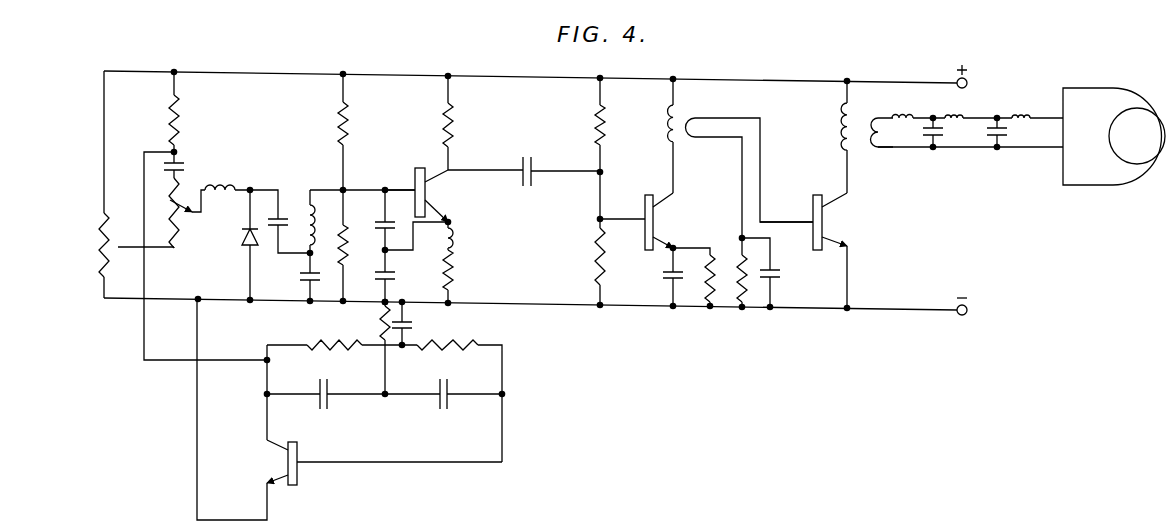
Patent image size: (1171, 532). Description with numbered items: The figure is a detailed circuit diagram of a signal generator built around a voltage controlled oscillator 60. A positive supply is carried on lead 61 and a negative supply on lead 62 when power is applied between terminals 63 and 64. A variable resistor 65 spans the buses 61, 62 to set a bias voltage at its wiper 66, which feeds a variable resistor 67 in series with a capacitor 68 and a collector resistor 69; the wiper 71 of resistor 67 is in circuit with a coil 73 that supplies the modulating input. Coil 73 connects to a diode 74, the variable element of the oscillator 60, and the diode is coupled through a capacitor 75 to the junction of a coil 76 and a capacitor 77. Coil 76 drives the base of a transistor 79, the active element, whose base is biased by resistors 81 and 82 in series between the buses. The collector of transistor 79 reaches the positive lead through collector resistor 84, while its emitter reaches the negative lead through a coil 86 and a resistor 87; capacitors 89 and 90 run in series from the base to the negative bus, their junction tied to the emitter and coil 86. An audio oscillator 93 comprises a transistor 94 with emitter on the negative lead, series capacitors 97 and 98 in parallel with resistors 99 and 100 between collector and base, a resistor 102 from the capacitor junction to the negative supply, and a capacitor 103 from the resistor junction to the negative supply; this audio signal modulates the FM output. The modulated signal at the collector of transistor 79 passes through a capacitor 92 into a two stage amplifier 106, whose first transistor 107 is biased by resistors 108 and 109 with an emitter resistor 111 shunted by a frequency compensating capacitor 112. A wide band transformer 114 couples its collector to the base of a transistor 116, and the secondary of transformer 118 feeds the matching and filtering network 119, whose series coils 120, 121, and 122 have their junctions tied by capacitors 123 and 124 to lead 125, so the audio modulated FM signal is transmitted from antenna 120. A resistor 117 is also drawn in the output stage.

The voltage controlled oscillator 60 is at (229, 64).
The positive supply lead 61 is at (148, 70).
The negative supply lead 62 is at (120, 300).
The terminal 63 is at (964, 78).
The terminal 64 is at (962, 316).
The variable resistor 65 is at (124, 246).
The wiper 66 is at (152, 248).
The variable resistor 67 is at (170, 200).
The capacitor 68 is at (179, 152).
The collector resistor 69 is at (180, 108).
The wiper 71 is at (199, 215).
The coil 73 is at (212, 185).
The diode 74 is at (247, 252).
The capacitor 75 is at (278, 212).
The coil 76 is at (307, 205).
The capacitor 77 is at (303, 278).
The transistor 79 is at (428, 192).
The resistor 81 is at (348, 127).
The resistor 82 is at (348, 238).
The collector resistor 84 is at (453, 120).
The coil 86 is at (455, 240).
The resistor 87 is at (455, 275).
The capacitor 89 is at (384, 215).
The capacitor 90 is at (390, 278).
The capacitor 92 is at (534, 178).
The audio oscillator 93 is at (510, 397).
The transistor 94 is at (300, 476).
The capacitor 97 is at (327, 402).
The capacitor 98 is at (433, 400).
The resistor 99 is at (305, 343).
The resistor 100 is at (470, 343).
The resistor 102 is at (380, 322).
The capacitor 103 is at (413, 324).
The two stage amplifier 106 is at (760, 38).
The transistor 107 is at (656, 220).
The resistor 108 is at (605, 135).
The resistor 109 is at (604, 262).
The resistor 111 is at (706, 277).
The frequency compensating capacitor 112 is at (667, 283).
The wide band transformer 114 is at (684, 114).
The transistor 116 is at (825, 226).
The resistor 117 is at (738, 267).
The transformer 118 is at (780, 278).
The matching and filtering network 119 is at (957, 197).
The coil 120 is at (897, 113).
The coil 121 is at (960, 113).
The coil 122 is at (1018, 112).
The capacitor 123 is at (935, 138).
The capacitor 124 is at (1000, 138).
The lead 125 is at (980, 148).